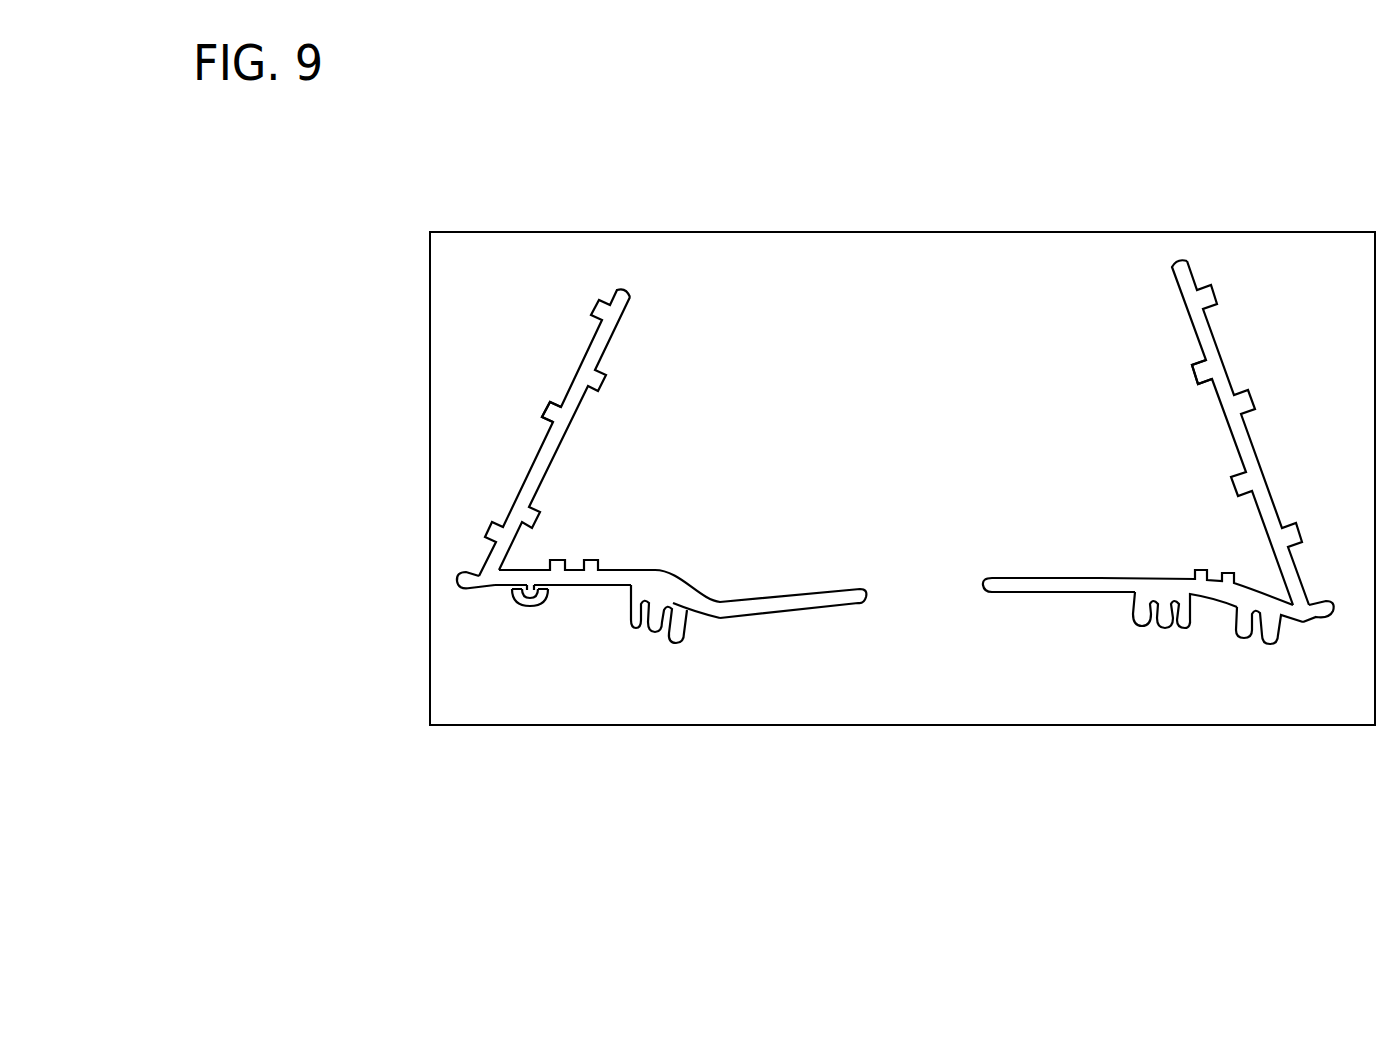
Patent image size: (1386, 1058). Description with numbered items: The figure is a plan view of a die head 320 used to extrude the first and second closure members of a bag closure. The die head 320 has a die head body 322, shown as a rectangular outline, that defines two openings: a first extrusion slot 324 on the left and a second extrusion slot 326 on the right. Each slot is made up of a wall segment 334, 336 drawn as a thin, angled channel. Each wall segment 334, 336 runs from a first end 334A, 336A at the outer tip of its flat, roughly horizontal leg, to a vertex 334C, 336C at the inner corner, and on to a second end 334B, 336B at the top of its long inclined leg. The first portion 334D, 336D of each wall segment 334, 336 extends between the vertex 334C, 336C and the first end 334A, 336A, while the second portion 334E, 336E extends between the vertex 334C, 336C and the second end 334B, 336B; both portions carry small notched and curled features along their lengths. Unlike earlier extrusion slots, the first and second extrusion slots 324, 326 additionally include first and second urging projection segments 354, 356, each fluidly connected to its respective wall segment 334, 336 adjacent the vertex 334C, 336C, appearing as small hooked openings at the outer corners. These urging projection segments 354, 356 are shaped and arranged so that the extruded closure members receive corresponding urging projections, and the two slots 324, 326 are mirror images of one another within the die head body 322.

The die head 320 is at (468, 790).
The die head body 322 is at (943, 703).
The first extrusion slot 324 is at (700, 415).
The second extrusion slot 326 is at (1163, 435).
The wall segment 334 is at (630, 490).
The first end 334A is at (860, 597).
The second end 334B is at (631, 296).
The vertex 334C is at (490, 586).
The first portion 334D is at (767, 607).
The second portion 334E is at (545, 458).
The wall segment 336 is at (1161, 471).
The first end 336A is at (990, 578).
The second end 336B is at (1185, 262).
The vertex 336C is at (1307, 617).
The first portion 336D is at (1102, 588).
The second portion 336E is at (1222, 383).
The first urging projection segment 354 is at (460, 580).
The second urging projection segment 356 is at (1318, 600).